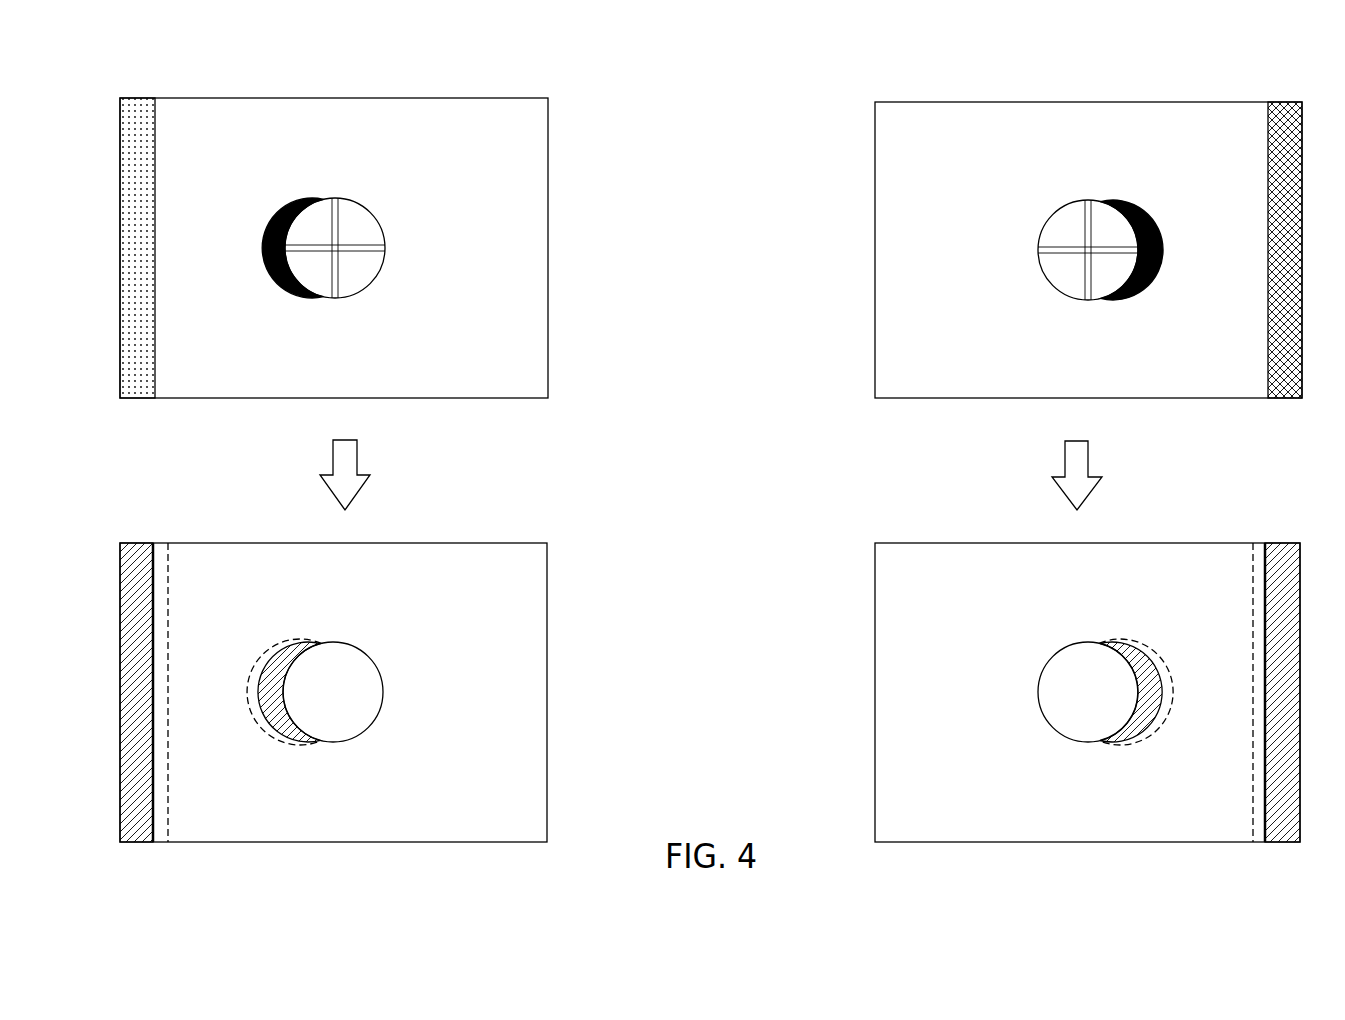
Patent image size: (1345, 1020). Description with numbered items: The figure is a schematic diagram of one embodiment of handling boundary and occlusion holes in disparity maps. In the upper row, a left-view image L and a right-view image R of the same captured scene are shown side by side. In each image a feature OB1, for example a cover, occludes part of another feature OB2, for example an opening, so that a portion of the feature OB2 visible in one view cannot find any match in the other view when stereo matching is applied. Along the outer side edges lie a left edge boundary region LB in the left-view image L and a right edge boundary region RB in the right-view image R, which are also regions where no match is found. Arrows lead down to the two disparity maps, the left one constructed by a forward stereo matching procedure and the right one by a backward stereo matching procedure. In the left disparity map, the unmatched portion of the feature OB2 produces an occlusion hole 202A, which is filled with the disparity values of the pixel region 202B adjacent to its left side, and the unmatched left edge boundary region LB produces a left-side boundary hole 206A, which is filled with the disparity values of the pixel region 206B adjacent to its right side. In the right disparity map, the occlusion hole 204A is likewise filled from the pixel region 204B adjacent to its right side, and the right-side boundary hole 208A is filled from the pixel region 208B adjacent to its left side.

The left-view image L is at (548, 247).
The right-view image R is at (875, 247).
The left edge boundary region LB is at (140, 103).
The right edge boundary region RB is at (1285, 105).
The feature OB1 is at (352, 207).
The feature OB2 is at (283, 203).
The occlusion hole 202A is at (297, 643).
The pixel region 202B is at (255, 662).
The occlusion hole 204A is at (1120, 647).
The pixel region 204B is at (1165, 662).
The left-side boundary hole 206A is at (135, 550).
The pixel region 206B is at (162, 548).
The right-side boundary hole 208A is at (1282, 548).
The pixel region 208B is at (1258, 547).